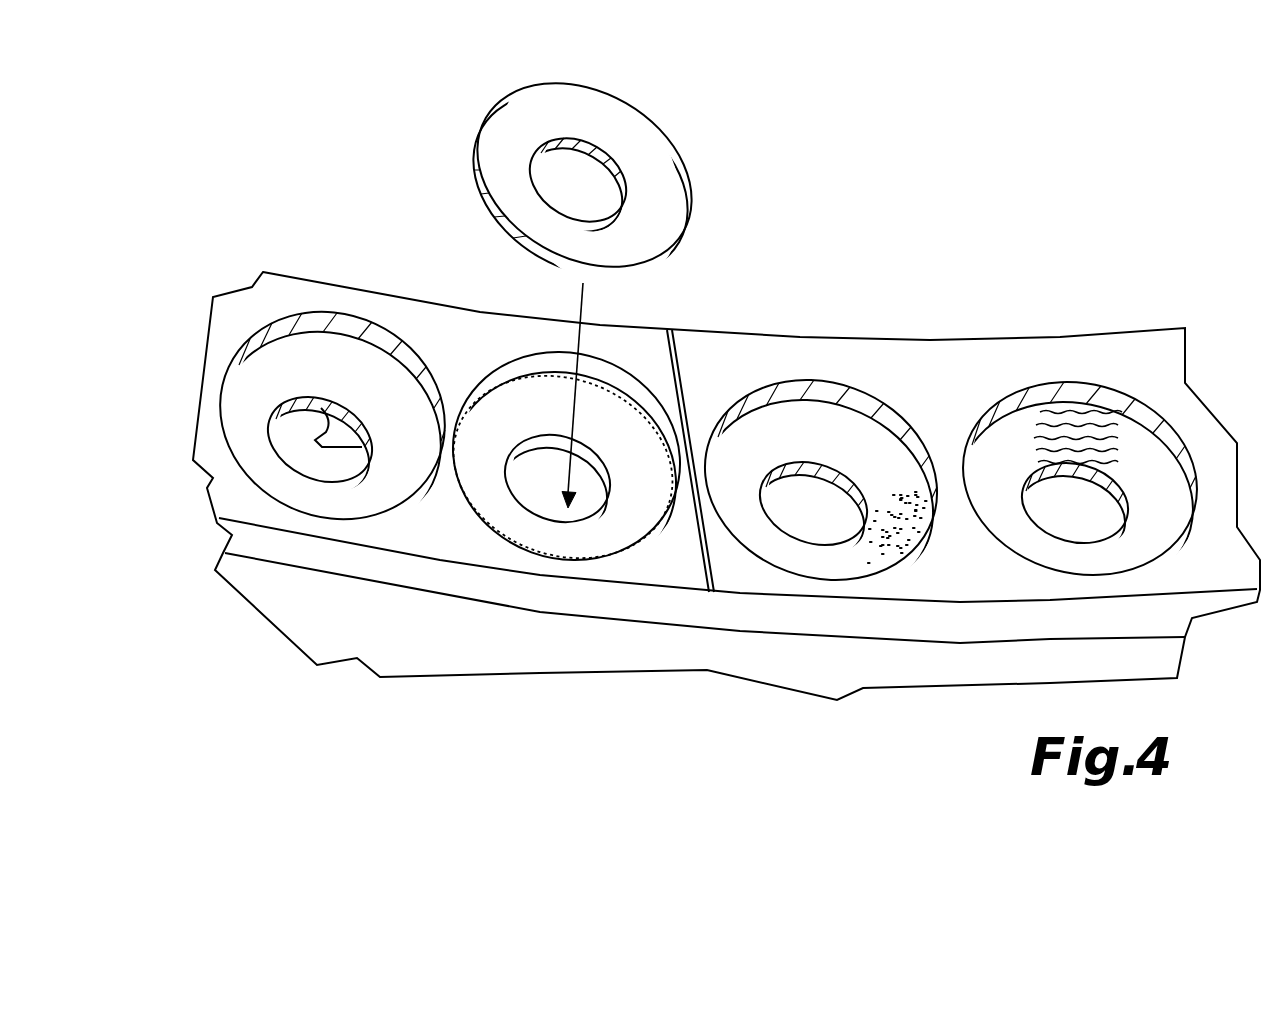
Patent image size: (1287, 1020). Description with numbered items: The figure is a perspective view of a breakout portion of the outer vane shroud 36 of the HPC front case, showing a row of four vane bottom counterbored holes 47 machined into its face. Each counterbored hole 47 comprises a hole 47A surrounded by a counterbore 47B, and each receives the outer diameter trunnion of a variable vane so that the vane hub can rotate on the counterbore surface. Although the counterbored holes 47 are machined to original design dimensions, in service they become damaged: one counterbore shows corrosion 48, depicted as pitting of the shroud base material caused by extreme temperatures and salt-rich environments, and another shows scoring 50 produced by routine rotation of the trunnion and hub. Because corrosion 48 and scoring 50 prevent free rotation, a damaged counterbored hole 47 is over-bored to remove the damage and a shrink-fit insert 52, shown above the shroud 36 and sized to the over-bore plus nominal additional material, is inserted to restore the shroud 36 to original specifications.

The outer vane shroud 36 is at (1142, 353).
The counterbored holes 47 is at (238, 306).
The hole 47A is at (296, 400).
The counterbore 47B is at (302, 350).
The corrosion 48 is at (883, 540).
The scoring 50 is at (1065, 438).
The shrink-fit insert 52 is at (535, 115).